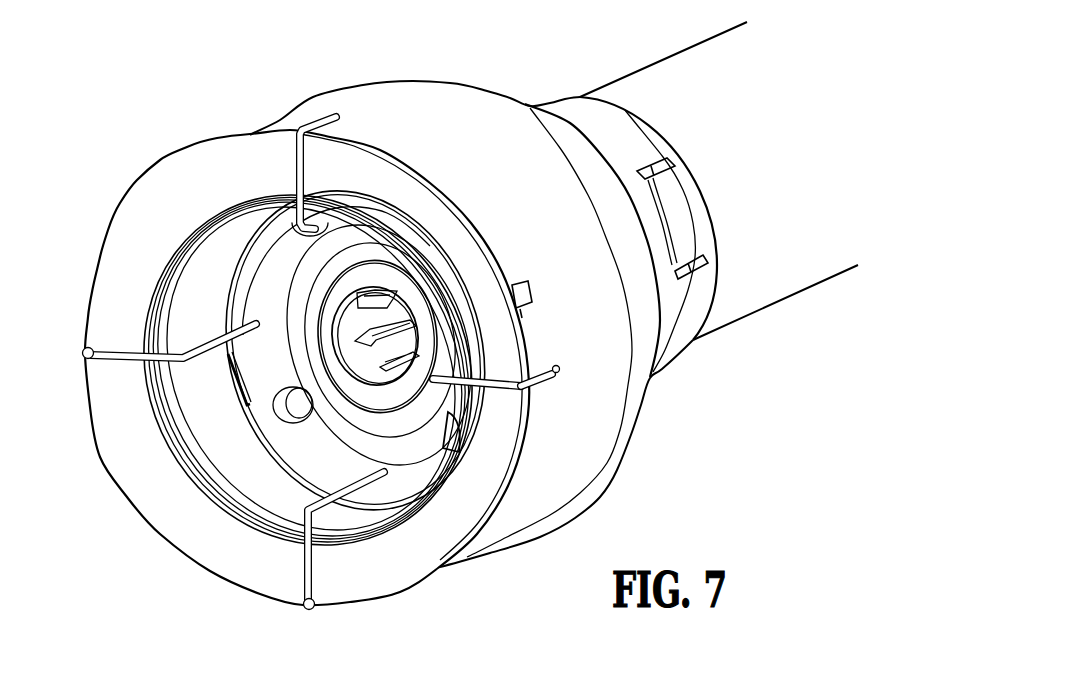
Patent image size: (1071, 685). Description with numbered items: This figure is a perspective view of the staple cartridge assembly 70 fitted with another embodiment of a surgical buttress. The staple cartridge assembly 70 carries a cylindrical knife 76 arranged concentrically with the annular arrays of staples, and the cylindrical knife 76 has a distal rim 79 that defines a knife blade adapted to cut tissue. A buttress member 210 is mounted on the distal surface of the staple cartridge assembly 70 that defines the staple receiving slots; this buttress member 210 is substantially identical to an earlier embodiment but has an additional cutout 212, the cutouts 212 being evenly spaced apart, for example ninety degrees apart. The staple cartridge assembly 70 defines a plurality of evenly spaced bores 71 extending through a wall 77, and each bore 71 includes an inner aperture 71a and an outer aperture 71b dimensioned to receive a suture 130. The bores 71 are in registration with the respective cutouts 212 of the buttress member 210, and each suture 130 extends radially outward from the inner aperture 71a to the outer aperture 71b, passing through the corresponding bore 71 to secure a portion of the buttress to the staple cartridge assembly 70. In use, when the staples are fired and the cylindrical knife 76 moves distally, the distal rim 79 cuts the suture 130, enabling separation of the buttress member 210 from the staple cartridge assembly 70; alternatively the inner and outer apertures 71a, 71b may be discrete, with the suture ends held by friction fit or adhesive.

The staple cartridge assembly 70 is at (495, 88).
The bore 71 is at (559, 441).
The inner aperture 71a is at (255, 378).
The outer aperture 71b is at (557, 375).
The cylindrical knife 76 is at (182, 265).
The wall 77 is at (545, 325).
The distal rim 79 is at (177, 428).
The suture 130 is at (387, 360).
The buttress member 210 is at (478, 276).
The cutout 212 is at (88, 351).